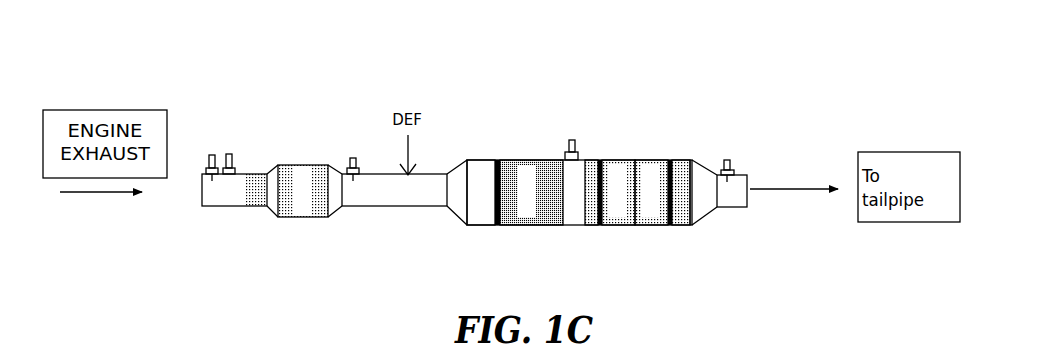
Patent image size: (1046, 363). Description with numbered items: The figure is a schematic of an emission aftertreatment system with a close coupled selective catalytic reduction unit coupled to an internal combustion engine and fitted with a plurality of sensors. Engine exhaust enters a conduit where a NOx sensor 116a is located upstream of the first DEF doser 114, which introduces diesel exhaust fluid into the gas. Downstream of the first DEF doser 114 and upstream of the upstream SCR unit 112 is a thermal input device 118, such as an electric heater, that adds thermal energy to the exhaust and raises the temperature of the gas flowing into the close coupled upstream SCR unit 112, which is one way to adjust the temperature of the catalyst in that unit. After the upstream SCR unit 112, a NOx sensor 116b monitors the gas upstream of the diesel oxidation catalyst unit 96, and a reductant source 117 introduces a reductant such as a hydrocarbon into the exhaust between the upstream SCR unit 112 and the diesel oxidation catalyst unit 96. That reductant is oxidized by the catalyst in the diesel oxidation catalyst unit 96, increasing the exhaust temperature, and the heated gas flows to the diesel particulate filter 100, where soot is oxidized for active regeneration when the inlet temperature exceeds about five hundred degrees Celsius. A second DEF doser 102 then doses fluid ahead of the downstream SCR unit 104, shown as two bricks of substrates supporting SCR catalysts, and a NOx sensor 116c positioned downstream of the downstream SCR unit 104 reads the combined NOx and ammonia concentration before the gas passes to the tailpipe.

The diesel oxidation catalyst unit 96 is at (477, 160).
The diesel particulate filter 100 is at (527, 160).
The second DEF doser 102 is at (570, 92).
The downstream SCR unit 104 is at (602, 231).
The upstream SCR unit 112 is at (300, 165).
The first DEF doser 114 is at (233, 106).
The NOx sensor 116a is at (212, 106).
The NOx sensor 116b is at (353, 106).
The NOx sensor 116c is at (728, 106).
The reductant source 117 is at (400, 221).
The thermal input device 118 is at (253, 207).